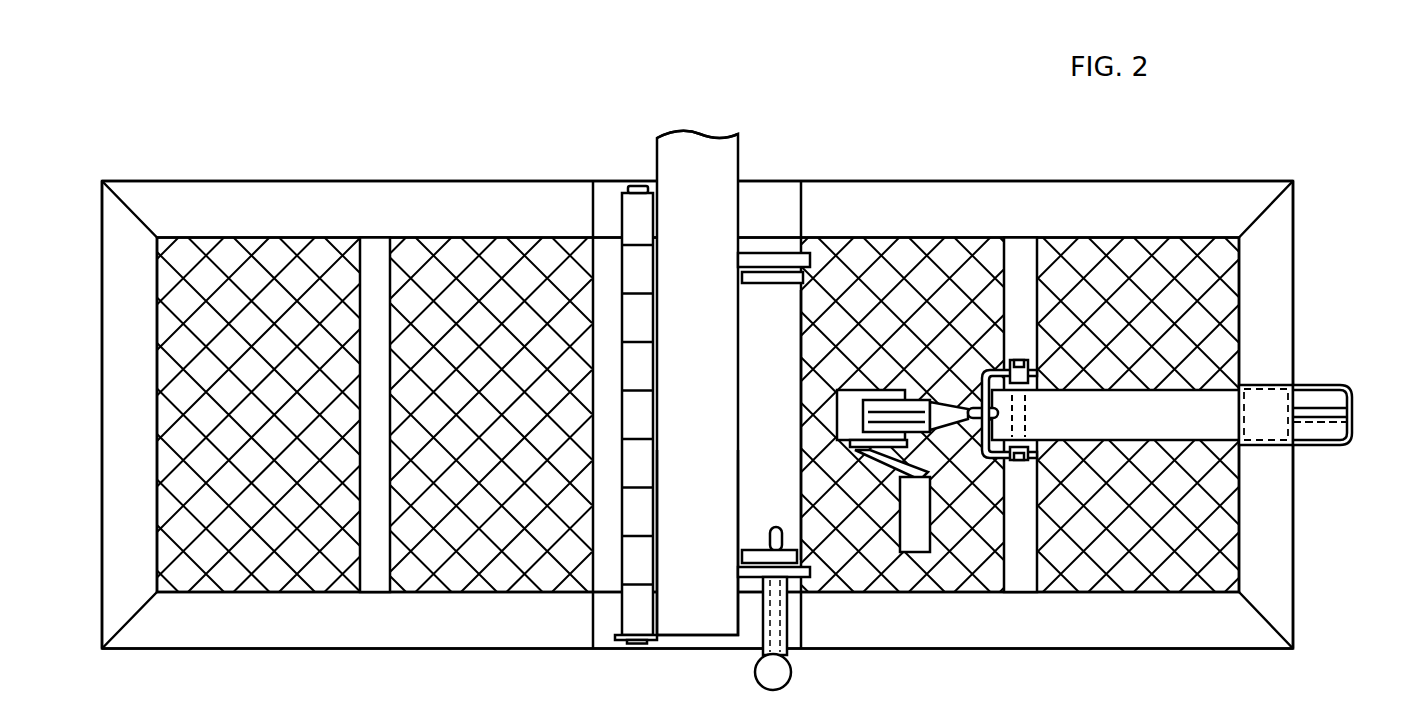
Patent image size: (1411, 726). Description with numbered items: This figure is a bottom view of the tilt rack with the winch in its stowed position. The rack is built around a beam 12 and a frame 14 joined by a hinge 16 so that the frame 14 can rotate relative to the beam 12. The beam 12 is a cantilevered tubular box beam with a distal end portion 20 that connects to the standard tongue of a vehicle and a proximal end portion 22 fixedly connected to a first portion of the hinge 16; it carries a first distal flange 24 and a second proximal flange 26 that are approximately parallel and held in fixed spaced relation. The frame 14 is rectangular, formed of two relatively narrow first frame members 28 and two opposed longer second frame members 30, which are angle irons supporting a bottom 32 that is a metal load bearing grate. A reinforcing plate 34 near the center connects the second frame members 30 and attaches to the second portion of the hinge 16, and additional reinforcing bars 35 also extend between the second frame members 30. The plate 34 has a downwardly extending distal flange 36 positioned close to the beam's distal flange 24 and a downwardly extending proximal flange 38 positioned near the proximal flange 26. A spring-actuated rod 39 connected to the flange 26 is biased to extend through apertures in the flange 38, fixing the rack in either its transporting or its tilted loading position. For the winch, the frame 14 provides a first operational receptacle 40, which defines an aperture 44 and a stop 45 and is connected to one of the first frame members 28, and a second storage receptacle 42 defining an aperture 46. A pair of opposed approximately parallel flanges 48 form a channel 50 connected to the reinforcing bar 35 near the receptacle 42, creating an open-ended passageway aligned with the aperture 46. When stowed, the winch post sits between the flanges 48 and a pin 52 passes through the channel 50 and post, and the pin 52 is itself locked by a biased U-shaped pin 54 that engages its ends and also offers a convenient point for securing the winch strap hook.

The beam 12 is at (706, 347).
The frame 14 is at (1217, 165).
The hinge 16 is at (618, 320).
The distal end portion 20 is at (716, 150).
The proximal end portion 22 is at (718, 492).
The first distal flange 24 is at (767, 256).
The second proximal flange 26 is at (793, 578).
The first frame members 28 is at (116, 422).
The second frame members 30 is at (392, 635).
The bottom 32 is at (475, 592).
The reinforcing plate 34 is at (784, 395).
The reinforcing bars 35 is at (375, 248).
The distal flange 36 is at (775, 284).
The proximal flange 38 is at (790, 547).
The spring-actuated rod 39 is at (768, 692).
The first operational receptacle 40 is at (1320, 452).
The second storage receptacle 42 is at (1260, 452).
The aperture 44 is at (1302, 400).
The stop 45 is at (1330, 419).
The aperture 46 is at (1232, 404).
The flanges 48 is at (1035, 385).
The channel 50 is at (1022, 358).
The pin 52 is at (1026, 427).
The pin 54 is at (983, 370).